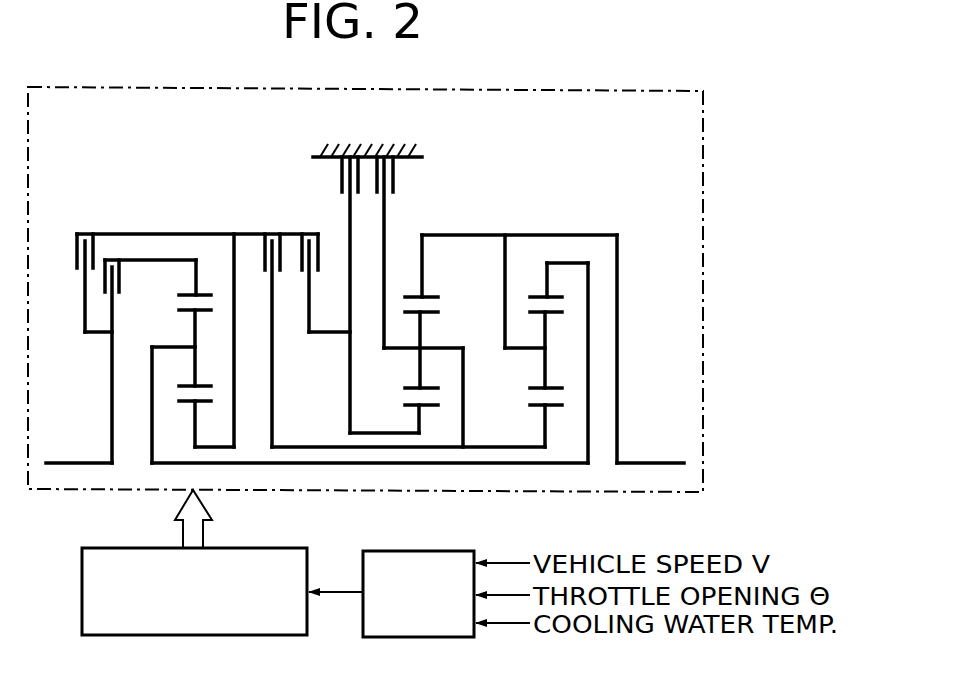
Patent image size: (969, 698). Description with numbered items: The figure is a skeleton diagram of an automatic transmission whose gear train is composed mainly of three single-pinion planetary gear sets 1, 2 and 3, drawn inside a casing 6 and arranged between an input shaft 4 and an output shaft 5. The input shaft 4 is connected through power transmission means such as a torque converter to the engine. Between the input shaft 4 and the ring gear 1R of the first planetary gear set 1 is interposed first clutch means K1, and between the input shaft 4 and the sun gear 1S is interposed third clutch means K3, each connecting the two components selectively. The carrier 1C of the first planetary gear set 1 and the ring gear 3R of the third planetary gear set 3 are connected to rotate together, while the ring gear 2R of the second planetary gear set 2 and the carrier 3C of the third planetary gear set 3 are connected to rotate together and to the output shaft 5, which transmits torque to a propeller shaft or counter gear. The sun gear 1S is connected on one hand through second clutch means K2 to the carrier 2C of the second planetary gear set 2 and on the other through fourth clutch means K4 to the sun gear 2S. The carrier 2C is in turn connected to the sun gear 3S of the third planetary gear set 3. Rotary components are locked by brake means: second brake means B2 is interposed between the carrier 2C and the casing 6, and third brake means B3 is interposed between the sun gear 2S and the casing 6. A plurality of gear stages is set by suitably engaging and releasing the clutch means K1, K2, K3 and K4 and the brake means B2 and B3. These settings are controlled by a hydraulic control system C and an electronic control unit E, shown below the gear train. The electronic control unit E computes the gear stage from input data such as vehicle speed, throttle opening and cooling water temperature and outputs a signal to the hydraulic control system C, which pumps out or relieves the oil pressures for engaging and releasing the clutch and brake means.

The first planetary gear set 1 is at (177, 379).
The second planetary gear set 2 is at (413, 384).
The third planetary gear set 3 is at (535, 398).
The input shaft 4 is at (82, 461).
The output shaft 5 is at (645, 462).
The transmission casing 6 is at (414, 151).
The ring gear of the first planetary gear set 1R is at (198, 294).
The carrier of the first planetary gear set 1C is at (178, 346).
The sun gear of the first planetary gear set 1S is at (193, 402).
The ring gear of the second planetary gear set 2R is at (420, 296).
The carrier of the second planetary gear set 2C is at (433, 348).
The sun gear of the second planetary gear set 2S is at (411, 406).
The ring gear of the third planetary gear set 3R is at (540, 297).
The carrier of the third planetary gear set 3C is at (530, 348).
The sun gear of the third planetary gear set 3S is at (535, 406).
The first clutch means K1 is at (150, 361).
The second clutch means K2 is at (269, 326).
The third clutch means K3 is at (90, 269).
The fourth clutch means K4 is at (323, 269).
The second brake means B2 is at (392, 231).
The third brake means B3 is at (373, 273).
The hydraulic control system C is at (182, 625).
The electronic control unit E is at (416, 630).